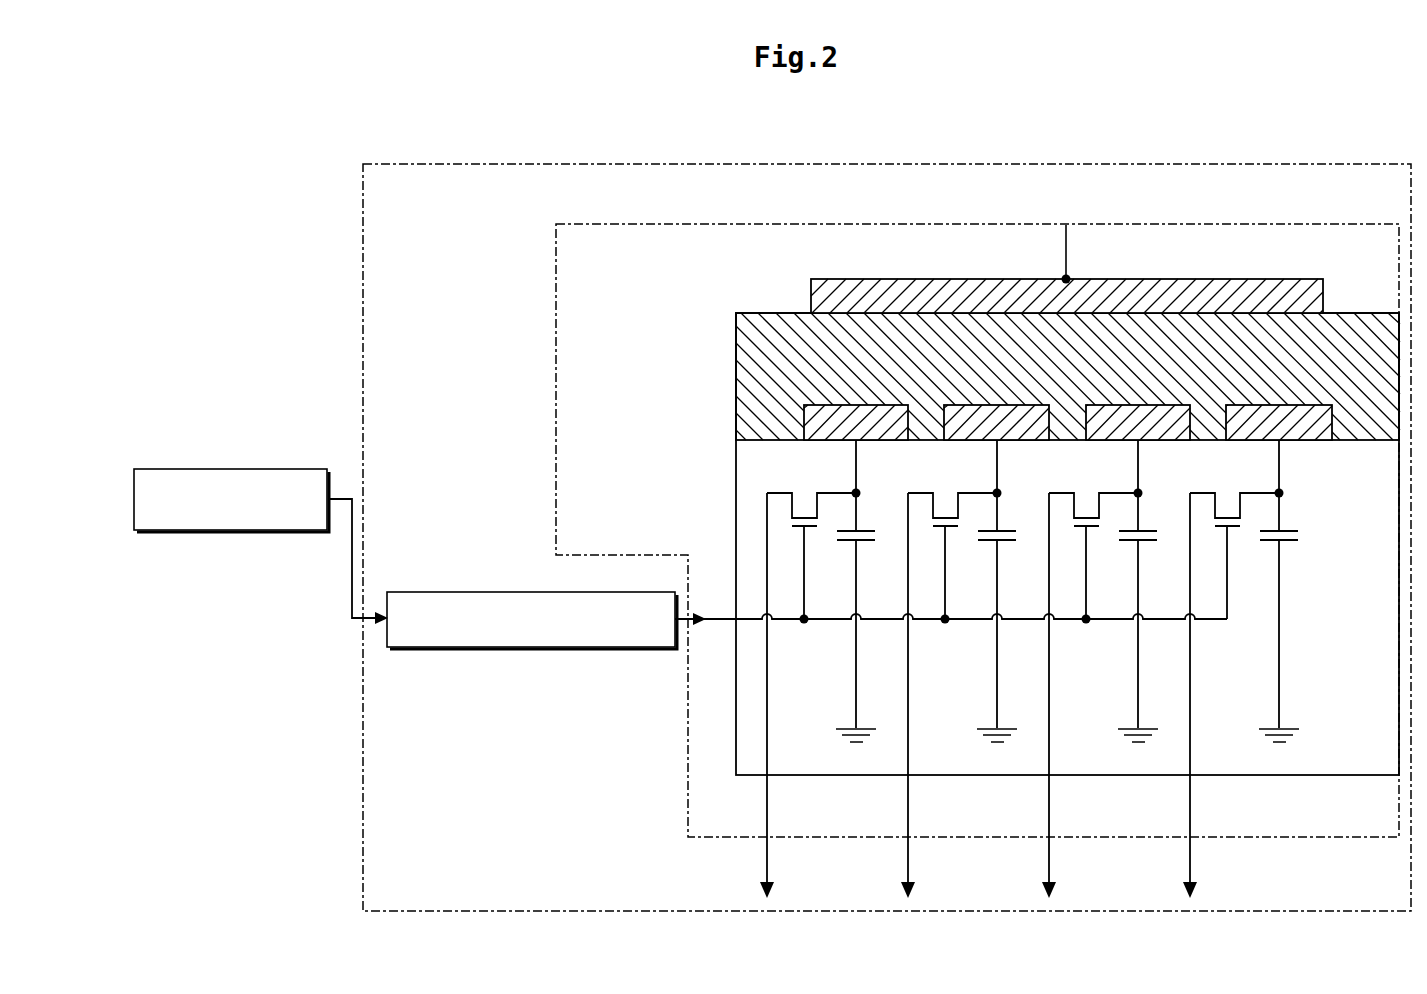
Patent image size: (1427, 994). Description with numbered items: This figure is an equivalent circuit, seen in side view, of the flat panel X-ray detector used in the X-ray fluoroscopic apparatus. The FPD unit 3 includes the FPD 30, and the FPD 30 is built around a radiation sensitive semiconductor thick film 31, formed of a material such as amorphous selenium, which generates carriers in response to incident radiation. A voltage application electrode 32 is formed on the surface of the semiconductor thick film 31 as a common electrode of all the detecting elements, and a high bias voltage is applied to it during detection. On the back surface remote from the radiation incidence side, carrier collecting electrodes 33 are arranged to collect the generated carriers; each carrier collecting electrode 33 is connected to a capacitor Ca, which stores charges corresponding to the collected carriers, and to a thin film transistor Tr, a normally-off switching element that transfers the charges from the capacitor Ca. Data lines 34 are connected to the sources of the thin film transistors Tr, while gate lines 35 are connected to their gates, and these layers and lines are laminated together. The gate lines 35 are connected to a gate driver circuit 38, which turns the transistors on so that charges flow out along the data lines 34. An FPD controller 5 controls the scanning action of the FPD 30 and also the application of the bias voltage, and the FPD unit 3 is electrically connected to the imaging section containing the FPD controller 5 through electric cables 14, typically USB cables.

The FPD unit 3 is at (896, 198).
The FPD 30 is at (558, 259).
The radiation sensitive semiconductor thick film 31 is at (742, 368).
The voltage application electrode 32 is at (1033, 277).
The carrier collecting electrodes 33 is at (806, 441).
The data lines 34 is at (767, 868).
The gate lines 35 is at (723, 622).
The gate driver circuit 38 is at (600, 640).
The FPD controller 5 is at (237, 533).
The electric cables 14 is at (352, 578).
The thin film transistors Tr is at (799, 492).
The capacitors Ca is at (872, 538).